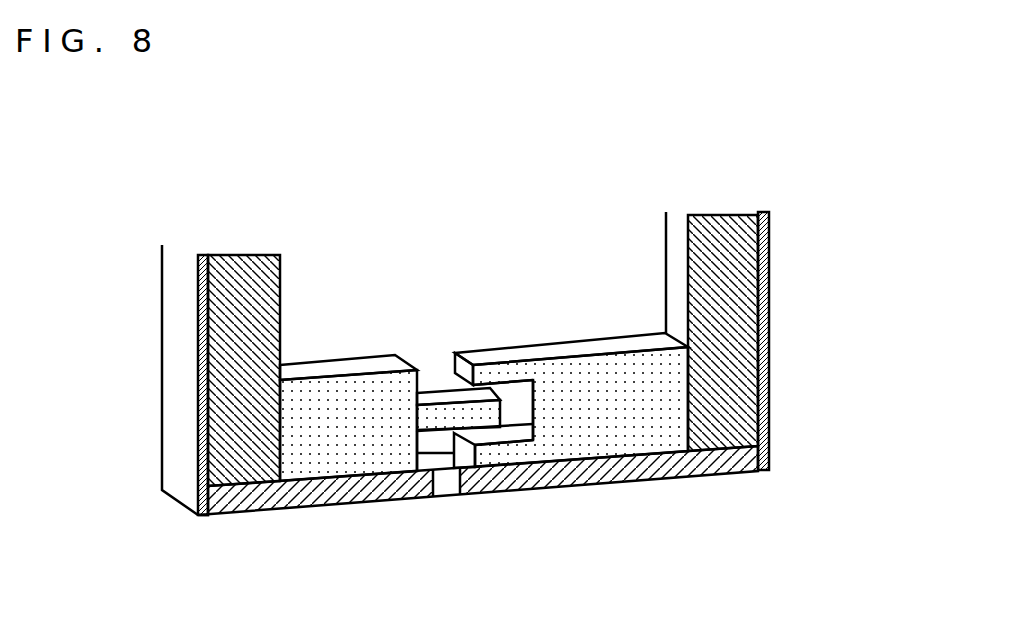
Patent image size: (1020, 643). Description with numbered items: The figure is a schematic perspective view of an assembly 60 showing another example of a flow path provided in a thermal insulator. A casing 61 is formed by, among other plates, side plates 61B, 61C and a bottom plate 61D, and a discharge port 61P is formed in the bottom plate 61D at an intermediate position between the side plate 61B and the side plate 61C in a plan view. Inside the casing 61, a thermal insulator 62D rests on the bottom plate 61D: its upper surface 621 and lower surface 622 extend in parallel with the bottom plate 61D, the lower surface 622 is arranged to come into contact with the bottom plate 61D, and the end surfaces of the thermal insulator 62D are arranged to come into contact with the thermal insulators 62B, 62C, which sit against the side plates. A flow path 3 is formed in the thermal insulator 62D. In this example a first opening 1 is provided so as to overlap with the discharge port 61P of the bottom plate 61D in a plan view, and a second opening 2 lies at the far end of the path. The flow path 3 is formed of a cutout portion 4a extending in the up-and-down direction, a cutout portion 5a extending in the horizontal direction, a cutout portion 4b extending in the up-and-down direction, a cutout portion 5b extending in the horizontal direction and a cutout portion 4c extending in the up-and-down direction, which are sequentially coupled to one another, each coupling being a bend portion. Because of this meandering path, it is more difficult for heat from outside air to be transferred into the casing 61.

The connection structure 60 is at (813, 160).
The casing 61 is at (161, 288).
The side plate 61B is at (762, 214).
The side plate 61C is at (183, 270).
The bottom plate 61D is at (663, 480).
The discharge port 61P is at (450, 487).
The thermal insulator 62B is at (725, 218).
The thermal insulator 62C is at (240, 273).
The thermal insulator 62D is at (287, 407).
The upper surface 621 is at (320, 372).
The lower surface 622 is at (593, 460).
The first opening 1 is at (427, 370).
The second member 2 is at (443, 463).
The flow path 3 is at (578, 293).
The cutout portion 4a is at (448, 368).
The cutout portion 4b is at (517, 392).
The cutout portion 4c is at (455, 454).
The cutout portion 5a is at (483, 395).
The cutout portion 5b is at (494, 438).